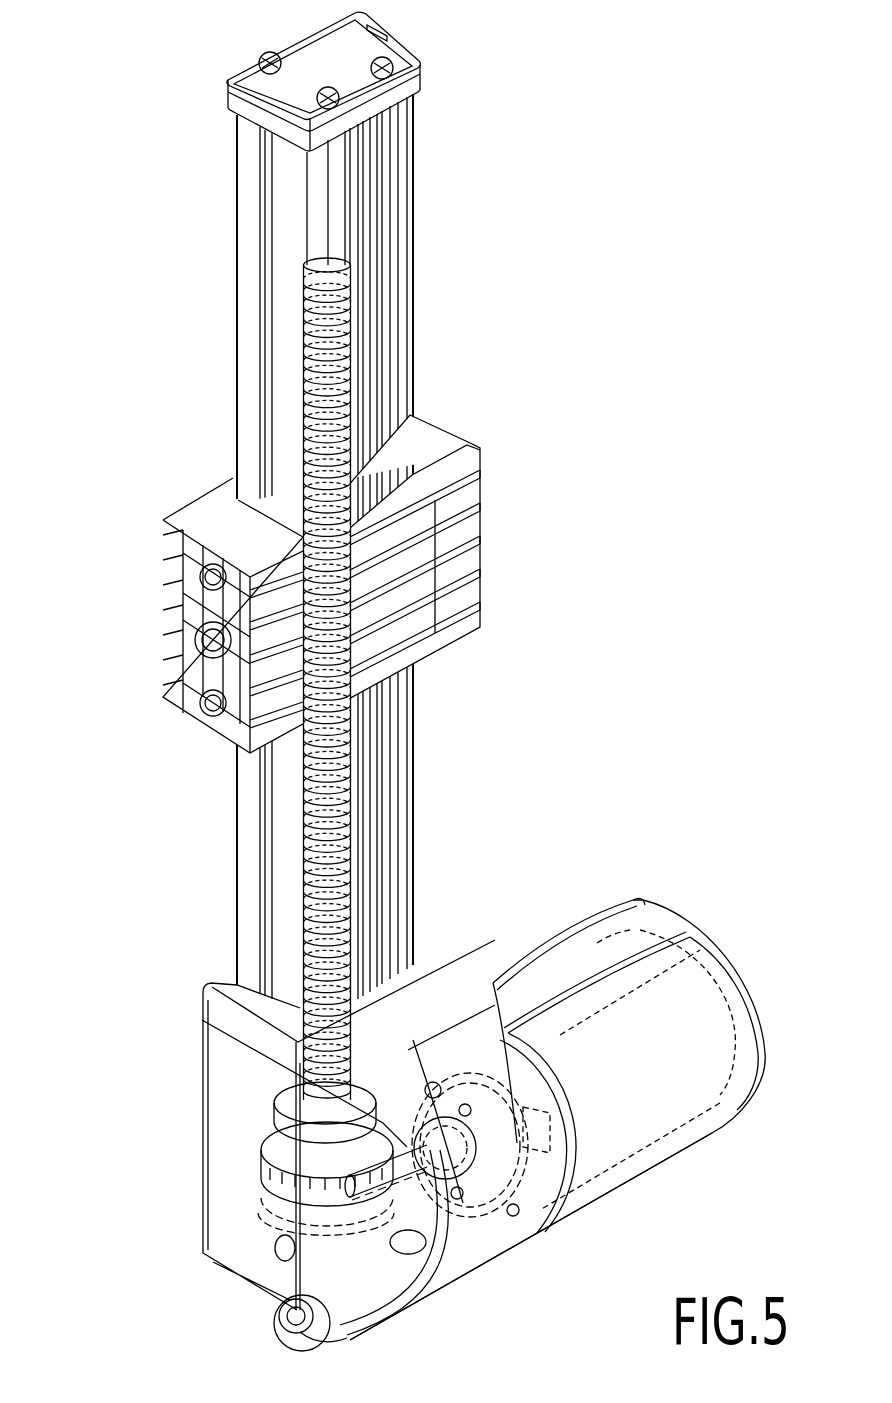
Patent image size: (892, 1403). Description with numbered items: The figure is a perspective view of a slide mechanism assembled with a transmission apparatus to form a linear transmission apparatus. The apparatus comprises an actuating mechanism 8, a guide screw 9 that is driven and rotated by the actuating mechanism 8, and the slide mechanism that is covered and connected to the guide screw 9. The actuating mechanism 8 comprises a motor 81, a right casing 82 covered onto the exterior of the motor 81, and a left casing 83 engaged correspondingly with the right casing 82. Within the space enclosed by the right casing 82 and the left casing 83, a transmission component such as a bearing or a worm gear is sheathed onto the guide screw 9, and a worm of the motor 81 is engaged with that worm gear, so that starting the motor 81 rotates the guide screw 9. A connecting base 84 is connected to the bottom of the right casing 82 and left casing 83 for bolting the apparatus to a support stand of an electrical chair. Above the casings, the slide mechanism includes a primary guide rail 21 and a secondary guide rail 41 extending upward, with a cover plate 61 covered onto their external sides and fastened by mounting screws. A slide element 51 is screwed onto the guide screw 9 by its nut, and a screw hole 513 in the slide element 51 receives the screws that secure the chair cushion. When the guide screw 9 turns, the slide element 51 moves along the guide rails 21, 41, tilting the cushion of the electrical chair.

The actuating mechanism 8 is at (401, 1141).
The guide screw 9 is at (305, 830).
The primary guide rail 21 is at (418, 288).
The secondary guide rail 41 is at (232, 283).
The slide element 51 is at (292, 562).
The screw hole 513 is at (205, 640).
The cover plate 61 is at (300, 45).
The motor 81 is at (662, 1115).
The right casing 82 is at (590, 927).
The left casing 83 is at (220, 1140).
The connecting base 84 is at (285, 1325).